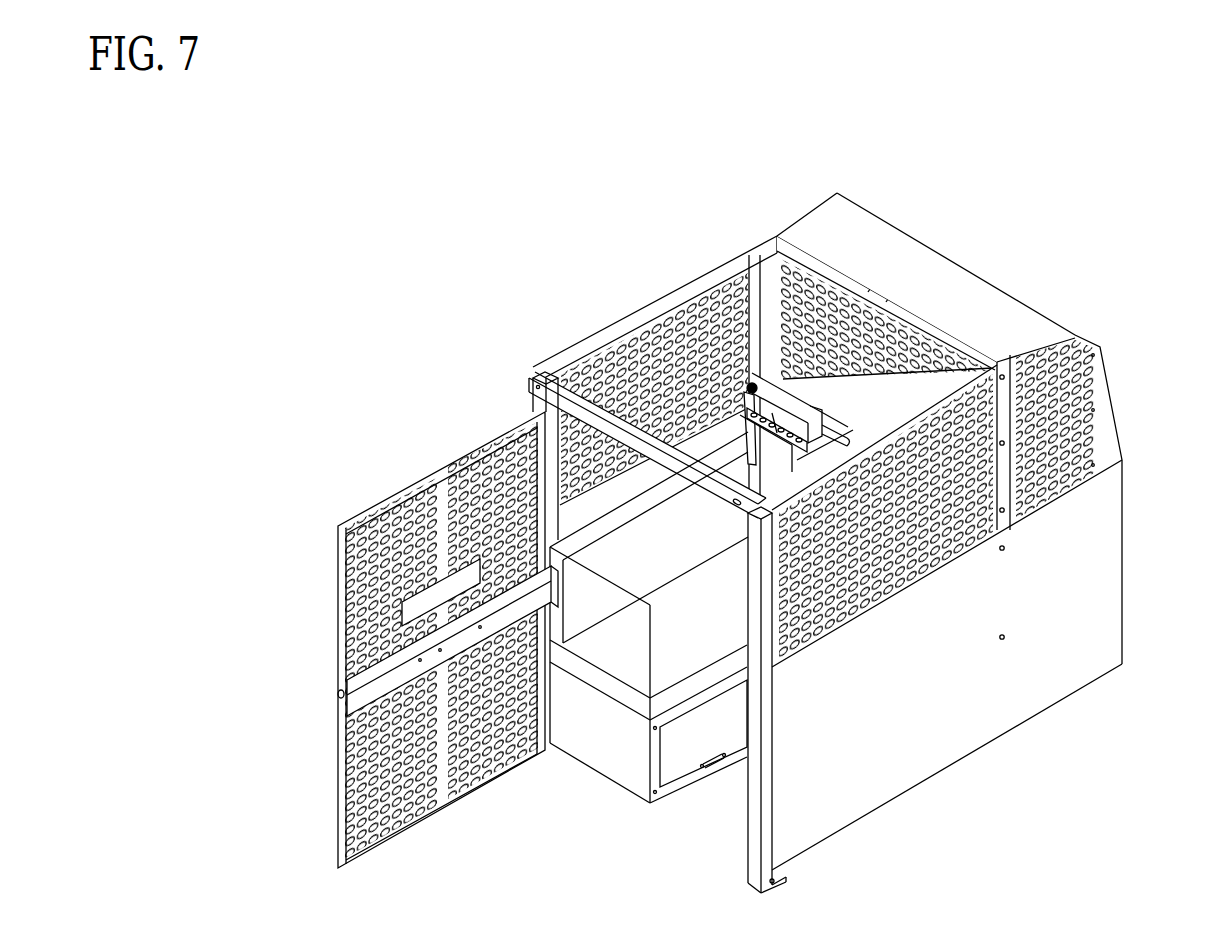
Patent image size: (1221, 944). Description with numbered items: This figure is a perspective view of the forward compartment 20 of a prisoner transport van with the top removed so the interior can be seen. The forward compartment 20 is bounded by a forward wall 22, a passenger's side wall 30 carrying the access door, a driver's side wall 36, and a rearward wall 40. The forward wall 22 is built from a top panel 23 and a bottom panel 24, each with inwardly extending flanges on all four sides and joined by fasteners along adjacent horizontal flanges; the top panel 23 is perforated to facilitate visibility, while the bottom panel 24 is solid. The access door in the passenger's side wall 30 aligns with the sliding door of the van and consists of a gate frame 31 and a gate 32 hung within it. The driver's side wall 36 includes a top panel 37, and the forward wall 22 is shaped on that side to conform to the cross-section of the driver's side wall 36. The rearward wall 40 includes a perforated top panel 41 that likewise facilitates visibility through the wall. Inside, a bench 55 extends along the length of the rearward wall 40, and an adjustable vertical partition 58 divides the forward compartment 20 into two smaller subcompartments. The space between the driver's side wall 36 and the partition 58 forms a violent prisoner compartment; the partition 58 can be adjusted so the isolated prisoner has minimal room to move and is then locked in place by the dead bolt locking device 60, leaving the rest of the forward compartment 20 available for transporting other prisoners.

The forward compartment 20 is at (630, 540).
The forward wall 22 is at (992, 605).
The top panel 23 is at (1103, 410).
The bottom panel 24 is at (1080, 615).
The passenger's side wall 30 is at (477, 417).
The gate frame 31 is at (530, 373).
The gate 32 is at (478, 470).
The driver's side wall 36 is at (949, 326).
The top panel 37 is at (960, 277).
The rearward wall 40 is at (632, 310).
The top panel 41 is at (683, 338).
The bench 55 is at (598, 737).
The adjustable vertical partition 58 is at (830, 273).
The dead bolt locking device 60 is at (754, 331).